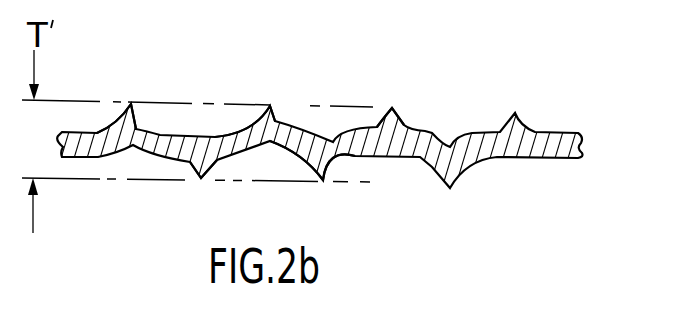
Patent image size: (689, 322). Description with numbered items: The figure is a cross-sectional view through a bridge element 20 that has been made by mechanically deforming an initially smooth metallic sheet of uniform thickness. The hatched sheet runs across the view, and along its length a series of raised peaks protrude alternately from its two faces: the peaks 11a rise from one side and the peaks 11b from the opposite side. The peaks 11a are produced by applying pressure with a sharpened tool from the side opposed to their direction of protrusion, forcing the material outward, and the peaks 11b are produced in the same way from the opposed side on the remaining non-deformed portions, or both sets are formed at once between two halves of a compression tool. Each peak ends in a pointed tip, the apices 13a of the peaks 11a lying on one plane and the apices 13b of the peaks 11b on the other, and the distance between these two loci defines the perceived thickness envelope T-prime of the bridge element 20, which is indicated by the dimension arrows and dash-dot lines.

The bridge element 20 is at (450, 85).
The raised peaks 11a is at (138, 125).
The raised peaks 11b is at (333, 172).
The apices 13a is at (391, 107).
The apices 13b is at (200, 180).